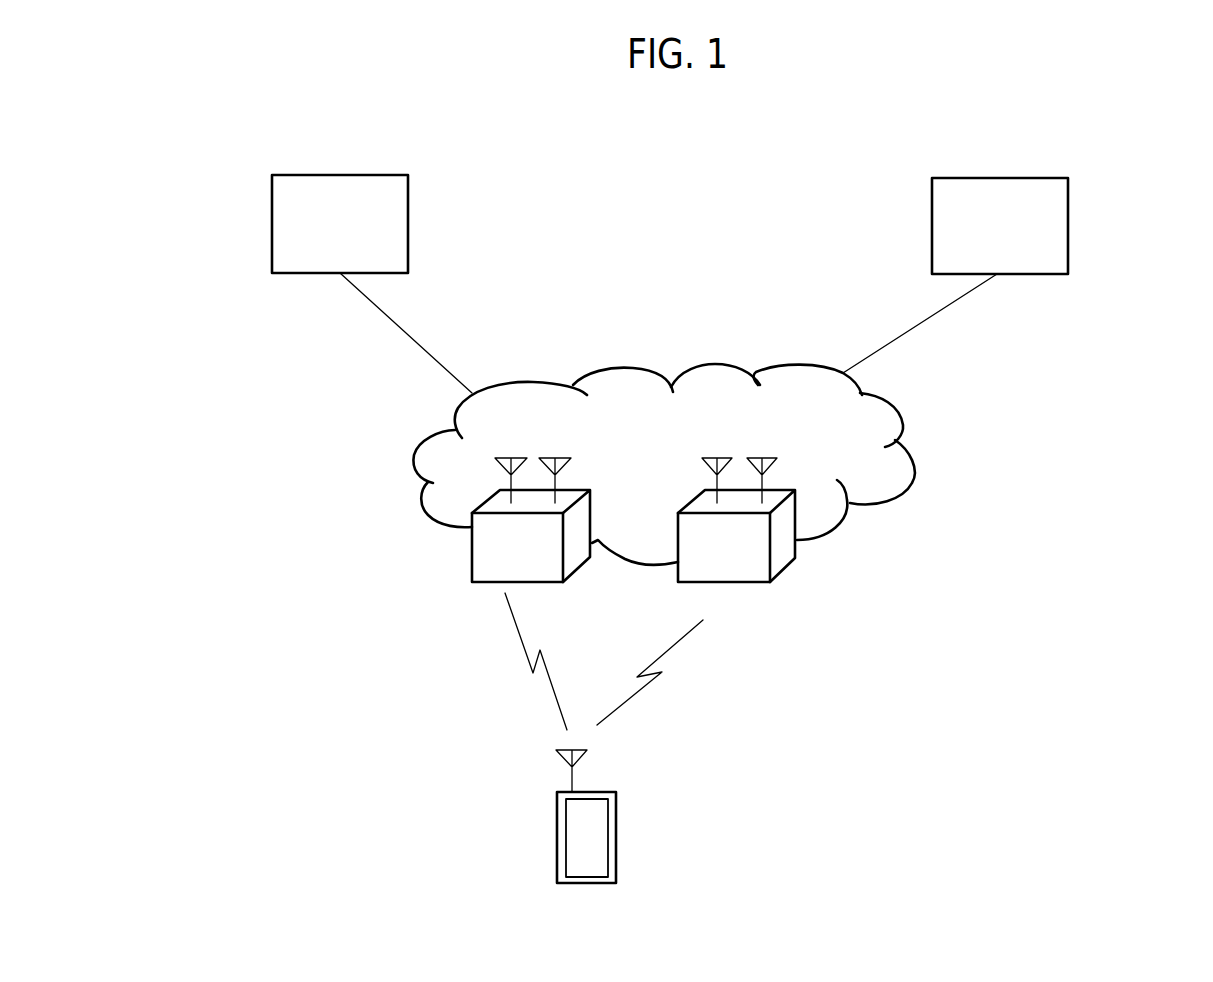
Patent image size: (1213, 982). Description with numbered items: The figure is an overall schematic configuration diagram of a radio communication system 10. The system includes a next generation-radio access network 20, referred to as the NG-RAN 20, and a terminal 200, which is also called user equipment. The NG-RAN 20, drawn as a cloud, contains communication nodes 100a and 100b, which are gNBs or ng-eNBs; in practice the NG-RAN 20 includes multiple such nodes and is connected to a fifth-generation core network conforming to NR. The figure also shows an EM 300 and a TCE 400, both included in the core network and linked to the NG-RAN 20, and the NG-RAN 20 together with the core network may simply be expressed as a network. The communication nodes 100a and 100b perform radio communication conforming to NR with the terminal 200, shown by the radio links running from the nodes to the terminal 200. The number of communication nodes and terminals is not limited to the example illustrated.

The radio communication system 10 is at (757, 345).
The next generation-radio access network 20 is at (880, 415).
The communication node 100a is at (487, 572).
The communication node 100b is at (780, 558).
The terminal 200 is at (613, 837).
The EM 300 is at (272, 223).
The TCE 400 is at (1068, 228).